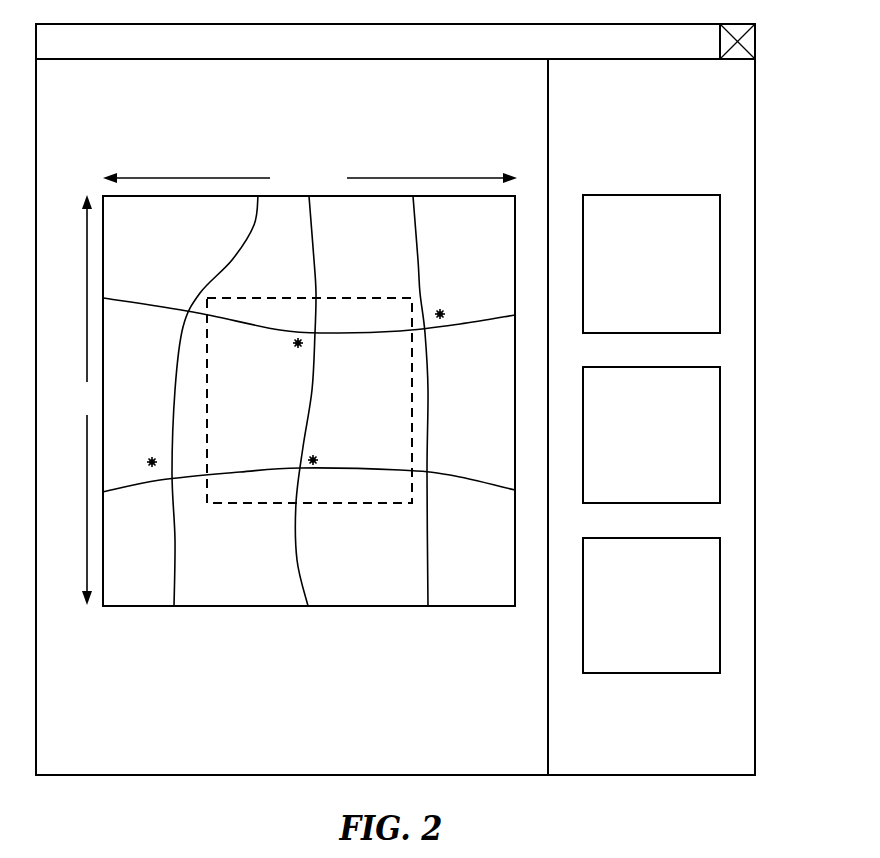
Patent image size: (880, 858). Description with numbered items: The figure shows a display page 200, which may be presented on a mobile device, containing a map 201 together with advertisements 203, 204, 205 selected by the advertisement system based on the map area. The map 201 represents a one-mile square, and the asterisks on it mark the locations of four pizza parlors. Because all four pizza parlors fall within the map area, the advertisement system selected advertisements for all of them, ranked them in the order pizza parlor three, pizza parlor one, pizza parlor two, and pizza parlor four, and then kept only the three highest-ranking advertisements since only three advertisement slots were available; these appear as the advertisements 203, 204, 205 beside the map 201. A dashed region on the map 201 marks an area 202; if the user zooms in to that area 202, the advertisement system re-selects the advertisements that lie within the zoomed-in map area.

The display page 200 is at (395, 388).
The map 201 is at (403, 170).
The area 202 is at (387, 503).
The advertisement 203 is at (651, 254).
The advertisement 204 is at (651, 425).
The advertisement 205 is at (651, 596).